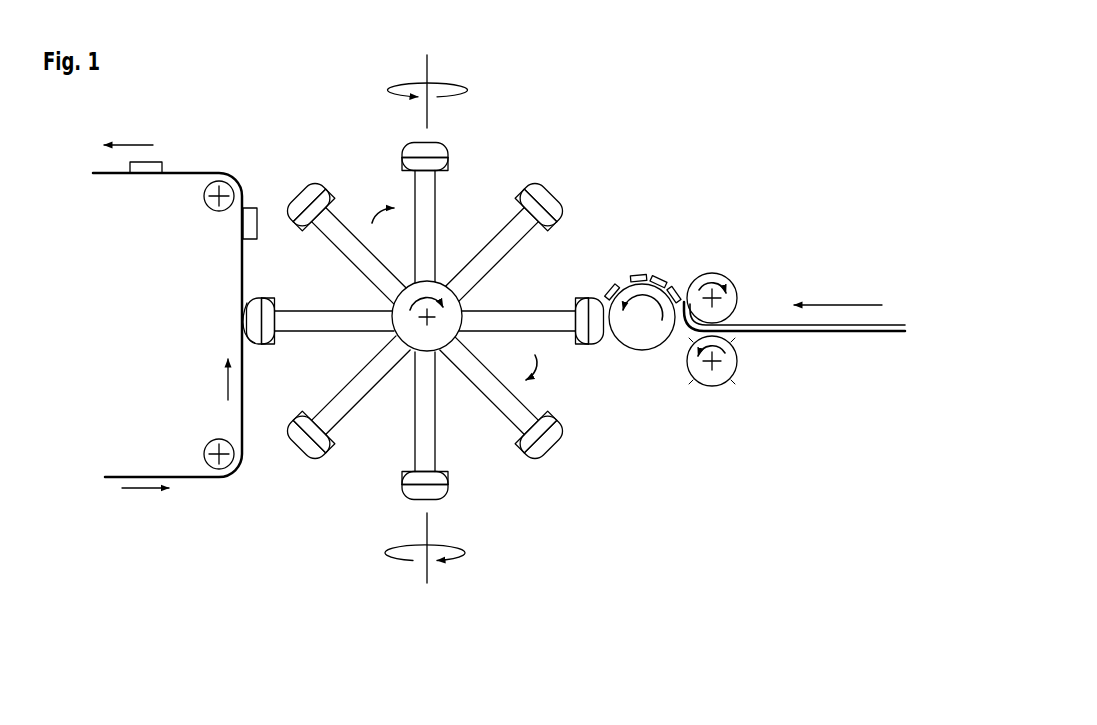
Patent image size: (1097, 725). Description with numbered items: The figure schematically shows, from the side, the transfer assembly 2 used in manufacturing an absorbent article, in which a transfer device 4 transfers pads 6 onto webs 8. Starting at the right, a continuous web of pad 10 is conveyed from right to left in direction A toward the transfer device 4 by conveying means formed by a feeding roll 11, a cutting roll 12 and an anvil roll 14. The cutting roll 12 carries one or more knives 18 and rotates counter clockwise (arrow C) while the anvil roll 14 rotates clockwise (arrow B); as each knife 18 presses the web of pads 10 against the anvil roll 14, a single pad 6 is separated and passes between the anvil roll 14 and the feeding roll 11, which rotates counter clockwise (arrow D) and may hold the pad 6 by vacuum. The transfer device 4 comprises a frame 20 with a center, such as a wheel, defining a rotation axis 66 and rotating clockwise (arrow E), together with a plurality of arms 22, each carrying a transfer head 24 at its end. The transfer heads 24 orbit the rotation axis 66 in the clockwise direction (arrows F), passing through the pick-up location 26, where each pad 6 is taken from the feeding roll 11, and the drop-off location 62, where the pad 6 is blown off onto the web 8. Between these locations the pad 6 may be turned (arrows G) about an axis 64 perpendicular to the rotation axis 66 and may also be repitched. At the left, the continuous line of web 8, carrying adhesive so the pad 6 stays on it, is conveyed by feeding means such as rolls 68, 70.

The transfer assembly 2 is at (704, 117).
The transfer device 4 is at (476, 158).
The pad 6 is at (152, 167).
The web 8 is at (173, 316).
The continuous web of pad 10 is at (880, 327).
The feeding roll 11 is at (656, 294).
The cutting roll 12 is at (731, 280).
The anvil roll 14 is at (755, 402).
The knife 18 is at (738, 342).
The frame 20 is at (434, 290).
The arm 22 is at (555, 341).
The transfer head 24 is at (541, 194).
The pick-up location 26 is at (603, 359).
The drop-off location 62 is at (253, 359).
The axis 64 is at (428, 565).
The rotation axis 66 is at (424, 320).
The roll 68 is at (206, 447).
The roll 70 is at (211, 208).